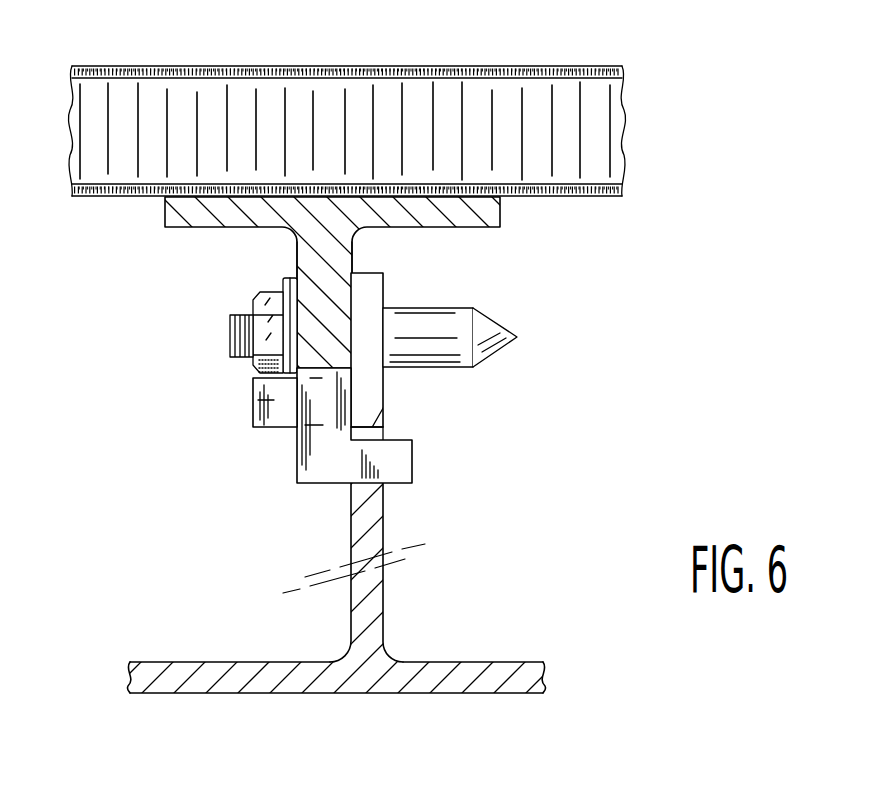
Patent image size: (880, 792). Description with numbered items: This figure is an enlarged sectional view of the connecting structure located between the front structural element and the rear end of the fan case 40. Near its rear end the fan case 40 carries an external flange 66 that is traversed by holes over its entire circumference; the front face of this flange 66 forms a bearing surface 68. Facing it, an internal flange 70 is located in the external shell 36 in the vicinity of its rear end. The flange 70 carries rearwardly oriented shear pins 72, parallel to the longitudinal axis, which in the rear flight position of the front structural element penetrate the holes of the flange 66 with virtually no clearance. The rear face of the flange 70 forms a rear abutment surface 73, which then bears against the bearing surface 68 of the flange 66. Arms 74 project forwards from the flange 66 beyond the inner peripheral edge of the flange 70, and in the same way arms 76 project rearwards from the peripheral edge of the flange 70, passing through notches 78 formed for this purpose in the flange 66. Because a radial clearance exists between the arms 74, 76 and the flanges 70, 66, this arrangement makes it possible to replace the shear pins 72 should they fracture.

The external shell 36 is at (236, 60).
The fan case 40 is at (271, 699).
The external flange 66 is at (366, 594).
The bearing surface 68 is at (352, 268).
The internal flange 70 is at (310, 252).
The shear pins 72 is at (487, 321).
The rear abutment surface 73 is at (364, 372).
The arms 74 is at (278, 405).
The arms 76 is at (360, 467).
The notches 78 is at (376, 434).